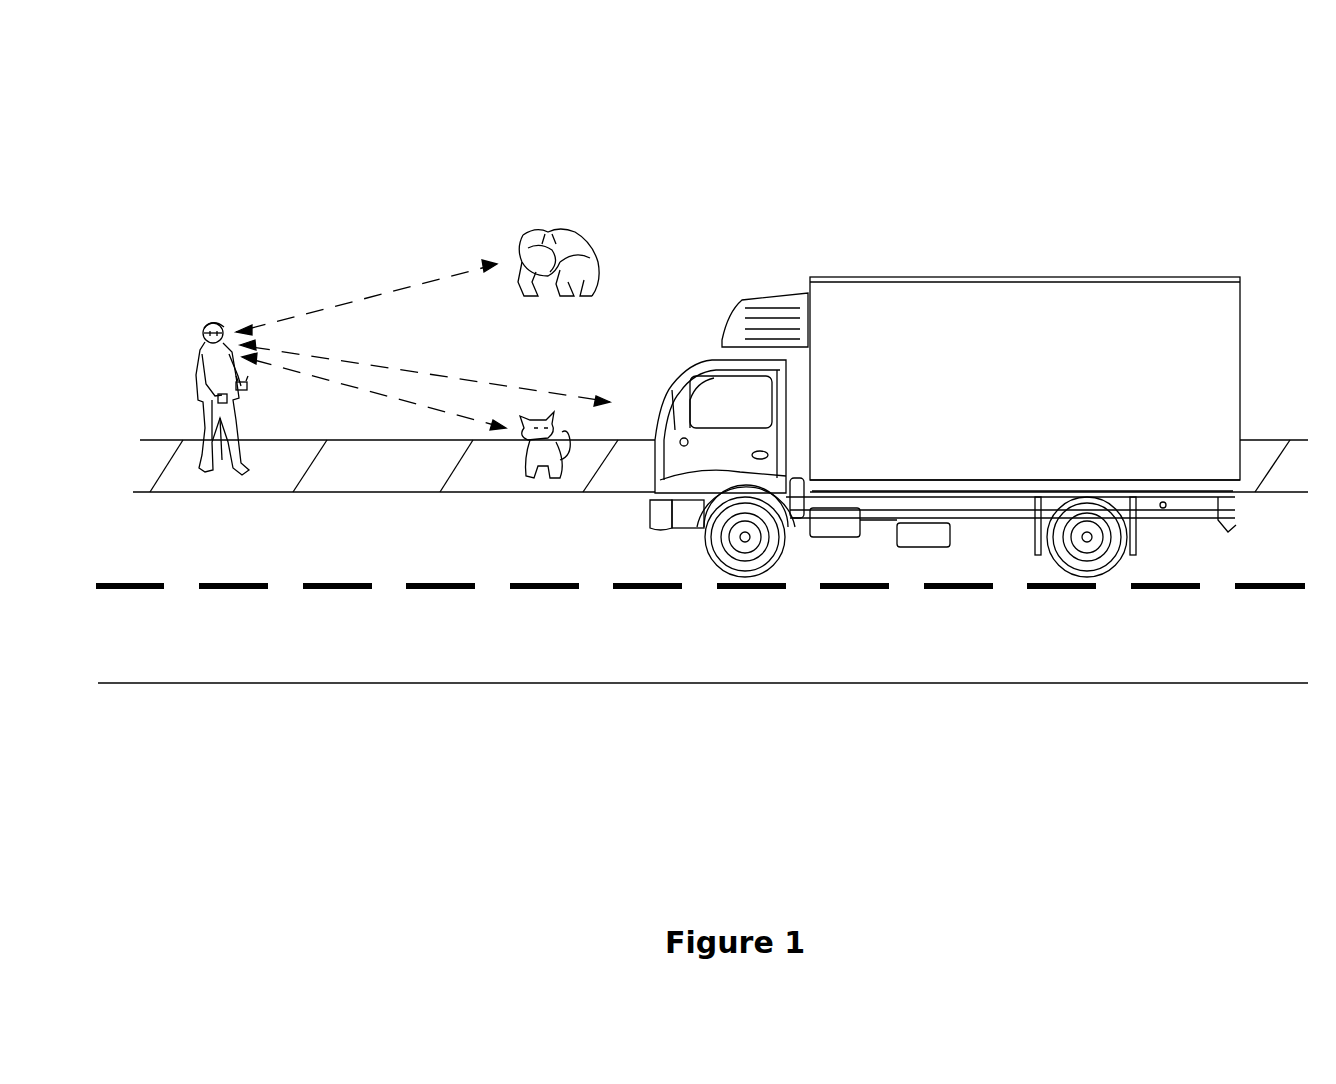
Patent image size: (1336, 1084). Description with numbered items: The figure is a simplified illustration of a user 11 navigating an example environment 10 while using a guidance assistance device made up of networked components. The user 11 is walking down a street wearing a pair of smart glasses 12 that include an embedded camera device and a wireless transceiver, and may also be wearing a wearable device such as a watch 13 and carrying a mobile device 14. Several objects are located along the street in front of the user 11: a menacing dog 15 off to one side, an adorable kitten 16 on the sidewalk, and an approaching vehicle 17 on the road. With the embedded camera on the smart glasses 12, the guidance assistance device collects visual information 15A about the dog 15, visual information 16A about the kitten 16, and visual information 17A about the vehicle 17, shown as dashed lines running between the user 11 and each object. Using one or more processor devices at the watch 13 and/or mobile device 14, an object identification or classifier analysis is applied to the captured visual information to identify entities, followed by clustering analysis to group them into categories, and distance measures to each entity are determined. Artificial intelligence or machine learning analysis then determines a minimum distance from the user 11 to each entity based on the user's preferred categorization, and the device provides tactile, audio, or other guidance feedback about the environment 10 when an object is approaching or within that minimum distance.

The environment 10 is at (146, 70).
The user 11 is at (204, 319).
The smart glasses 12 is at (207, 336).
The watch 13 is at (247, 388).
The mobile device 14 is at (224, 400).
The dog 15 is at (517, 223).
The visual information 15A is at (398, 292).
The kitten 16 is at (507, 503).
The visual information 16A is at (395, 398).
The vehicle 17 is at (734, 290).
The visual information 17A is at (440, 374).